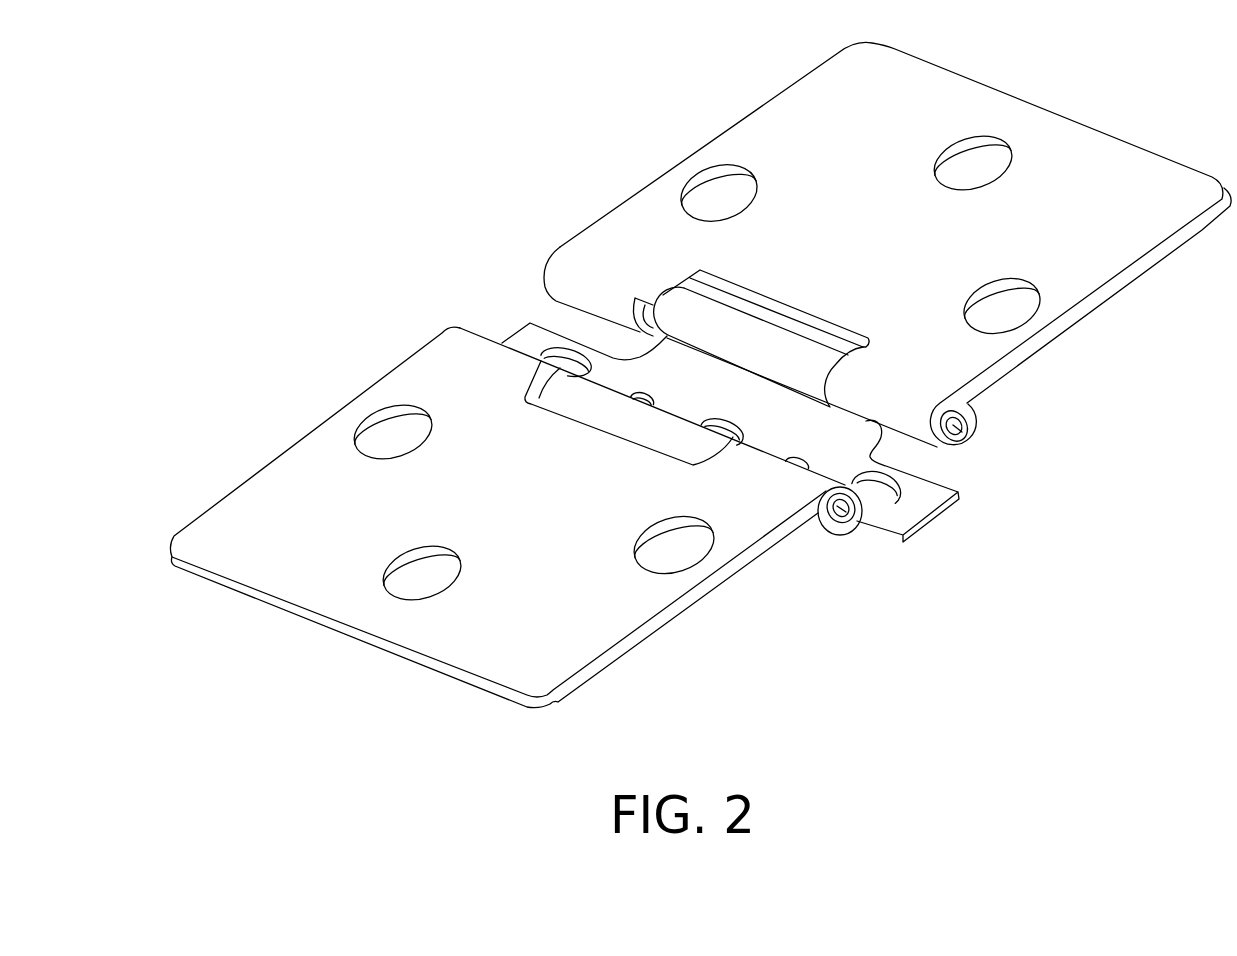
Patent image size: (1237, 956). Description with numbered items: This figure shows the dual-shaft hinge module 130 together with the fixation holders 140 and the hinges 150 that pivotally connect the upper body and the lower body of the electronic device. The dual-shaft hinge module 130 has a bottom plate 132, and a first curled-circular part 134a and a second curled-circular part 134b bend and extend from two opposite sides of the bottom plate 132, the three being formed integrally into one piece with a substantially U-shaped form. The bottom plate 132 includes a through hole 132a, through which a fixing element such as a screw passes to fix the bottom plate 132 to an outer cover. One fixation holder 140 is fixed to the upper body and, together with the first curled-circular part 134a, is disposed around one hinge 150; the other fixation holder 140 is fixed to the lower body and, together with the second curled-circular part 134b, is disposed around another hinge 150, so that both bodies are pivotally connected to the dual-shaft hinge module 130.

The dual-shaft hinge module 130 is at (958, 528).
The bottom plate 132 is at (937, 490).
The through hole 132a is at (884, 494).
The first curled-circular part 134a is at (697, 310).
The second curled-circular part 134b is at (563, 386).
The fixation holder 140 is at (1147, 163).
The hinge 150 is at (963, 432).